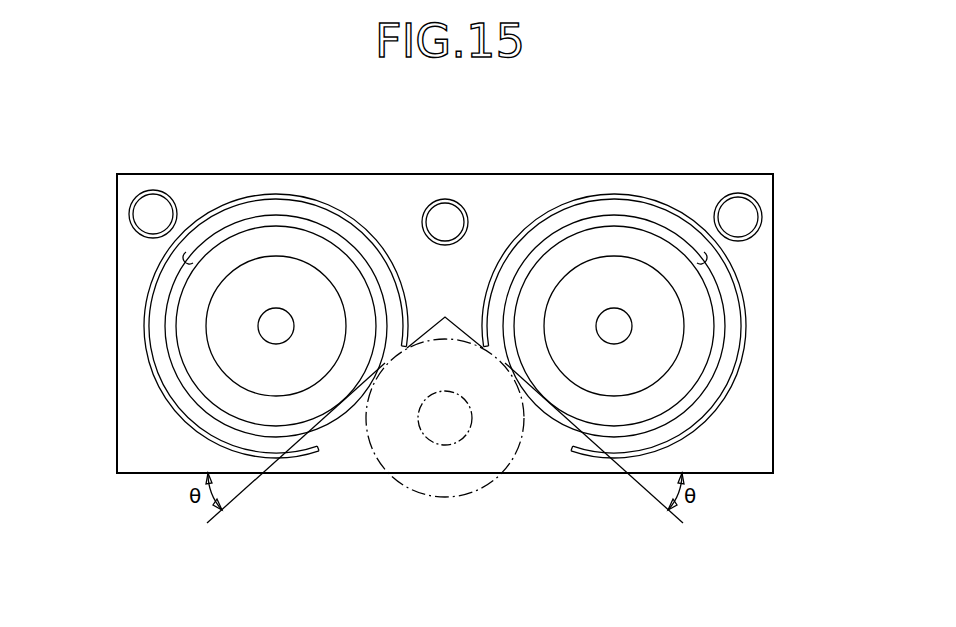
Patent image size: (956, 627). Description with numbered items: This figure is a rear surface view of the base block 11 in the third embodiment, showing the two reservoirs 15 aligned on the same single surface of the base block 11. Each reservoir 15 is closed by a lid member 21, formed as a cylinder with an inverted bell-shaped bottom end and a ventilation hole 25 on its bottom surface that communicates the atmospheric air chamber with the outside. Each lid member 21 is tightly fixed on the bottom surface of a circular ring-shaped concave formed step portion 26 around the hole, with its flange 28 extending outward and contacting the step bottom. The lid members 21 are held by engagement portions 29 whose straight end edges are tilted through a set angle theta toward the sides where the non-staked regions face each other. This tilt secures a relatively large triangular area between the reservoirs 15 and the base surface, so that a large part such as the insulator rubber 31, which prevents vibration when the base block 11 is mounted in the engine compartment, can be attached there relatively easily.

The base block 11 is at (742, 448).
The reservoir 15 is at (215, 209).
The lid member 21 is at (243, 240).
The ventilation hole 25 is at (284, 312).
The concave formed step portion 26 is at (183, 263).
The flange 28 is at (343, 413).
The engagement portion 29 is at (357, 238).
The insulator rubber 31 is at (483, 485).